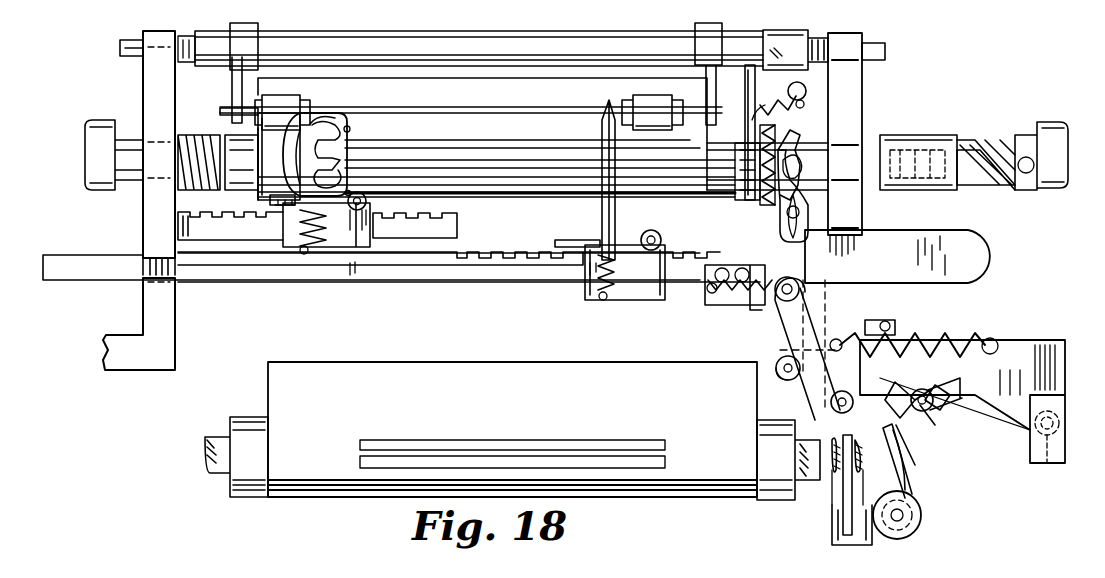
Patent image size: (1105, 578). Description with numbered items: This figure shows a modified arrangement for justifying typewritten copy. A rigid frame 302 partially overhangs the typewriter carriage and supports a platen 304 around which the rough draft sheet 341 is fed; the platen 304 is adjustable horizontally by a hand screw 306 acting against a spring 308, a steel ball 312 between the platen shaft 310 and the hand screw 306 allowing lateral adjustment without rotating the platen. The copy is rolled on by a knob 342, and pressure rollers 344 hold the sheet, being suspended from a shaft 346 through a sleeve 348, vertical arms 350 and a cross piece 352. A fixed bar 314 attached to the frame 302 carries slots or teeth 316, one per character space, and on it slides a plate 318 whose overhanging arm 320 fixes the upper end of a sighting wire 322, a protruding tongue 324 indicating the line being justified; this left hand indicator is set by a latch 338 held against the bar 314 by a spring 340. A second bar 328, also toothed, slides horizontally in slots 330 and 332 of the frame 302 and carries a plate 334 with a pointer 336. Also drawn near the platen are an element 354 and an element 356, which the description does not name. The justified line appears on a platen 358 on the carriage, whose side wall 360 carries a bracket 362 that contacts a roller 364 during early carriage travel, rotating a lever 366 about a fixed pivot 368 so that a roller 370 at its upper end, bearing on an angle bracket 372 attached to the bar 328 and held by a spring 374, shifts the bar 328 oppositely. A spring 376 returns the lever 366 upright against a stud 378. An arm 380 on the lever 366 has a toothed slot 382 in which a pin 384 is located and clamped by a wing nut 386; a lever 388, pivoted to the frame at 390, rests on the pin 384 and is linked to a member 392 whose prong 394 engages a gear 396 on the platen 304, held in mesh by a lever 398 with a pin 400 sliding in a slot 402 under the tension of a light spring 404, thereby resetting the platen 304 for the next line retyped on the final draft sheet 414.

The frame 302 is at (166, 304).
The platen 304 is at (725, 200).
The hand screw 306 is at (1034, 128).
The spring 308 is at (190, 193).
The shaft 310 is at (900, 190).
The steel ball 312 is at (945, 200).
The fixed bar 314 is at (192, 232).
The slots or teeth 316 is at (411, 212).
The plate 318 is at (383, 244).
The overhanging arm 320 is at (279, 159).
The sighting wire 322 is at (352, 136).
The protruding tongue 324 is at (277, 179).
The bar 328 is at (333, 278).
The slot 330 is at (148, 262).
The slot 332 is at (860, 270).
The plate 334 is at (620, 290).
The pointer 336 is at (603, 215).
The latch 338 is at (320, 207).
The spring 340 is at (298, 238).
The sheet 341 is at (462, 85).
The knob 342 is at (85, 143).
The pressure rollers 344 is at (278, 100).
The shaft 346 is at (120, 45).
The sleeve 348 is at (348, 30).
The vertical arms 350 is at (233, 85).
The cross piece 352 is at (544, 108).
The rod 354 is at (757, 90).
The collar 356 is at (740, 205).
The platen 358 is at (243, 418).
The side wall 360 is at (832, 490).
The bracket 362 is at (852, 545).
The roller 364 is at (900, 539).
The lever 366 is at (910, 470).
The fixed pivot 368 is at (830, 402).
The roller 370 is at (775, 312).
The angle bracket 372 is at (762, 258).
The spring 374 is at (745, 298).
The spring 376 is at (906, 336).
The stud 378 is at (888, 320).
The arm 380 is at (890, 430).
The slot 382 is at (950, 400).
The pin 384 is at (920, 408).
The wing nut 386 is at (950, 420).
The lever 388 is at (1010, 345).
The pivot 390 is at (1036, 460).
The member 392 is at (777, 342).
The prong 394 is at (735, 148).
The gear 396 is at (765, 135).
The lever 398 is at (800, 142).
The pin 400 is at (790, 200).
The slot 402 is at (790, 240).
The spring 404 is at (816, 90).
The final draft sheet 414 is at (450, 362).